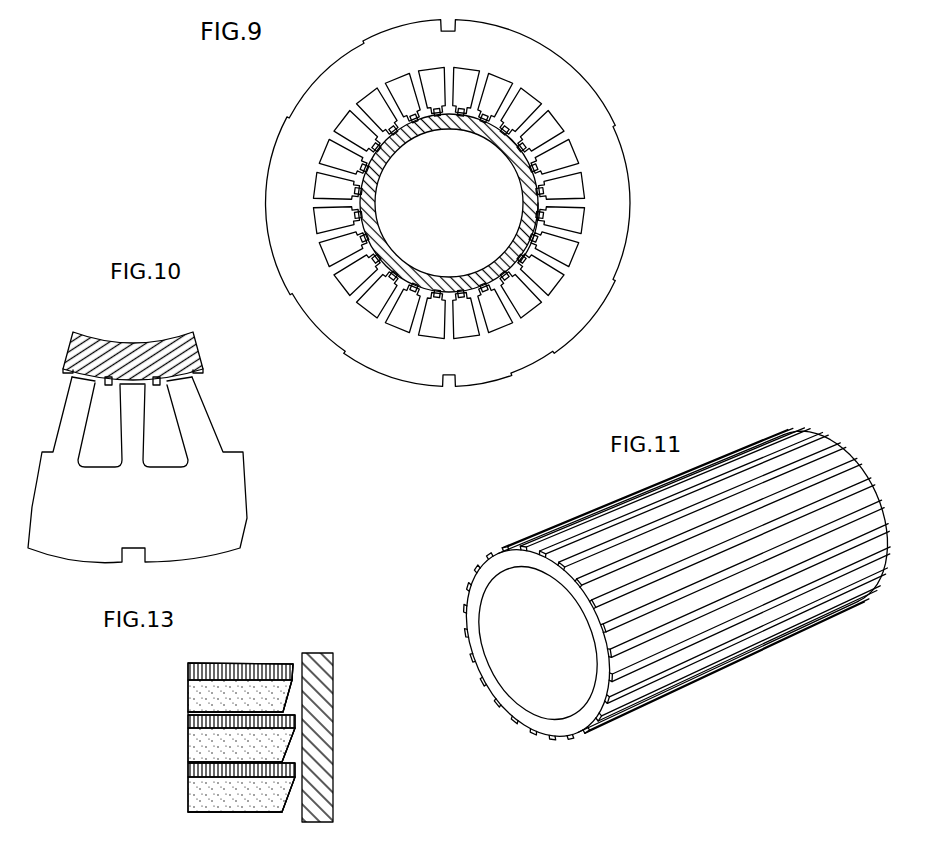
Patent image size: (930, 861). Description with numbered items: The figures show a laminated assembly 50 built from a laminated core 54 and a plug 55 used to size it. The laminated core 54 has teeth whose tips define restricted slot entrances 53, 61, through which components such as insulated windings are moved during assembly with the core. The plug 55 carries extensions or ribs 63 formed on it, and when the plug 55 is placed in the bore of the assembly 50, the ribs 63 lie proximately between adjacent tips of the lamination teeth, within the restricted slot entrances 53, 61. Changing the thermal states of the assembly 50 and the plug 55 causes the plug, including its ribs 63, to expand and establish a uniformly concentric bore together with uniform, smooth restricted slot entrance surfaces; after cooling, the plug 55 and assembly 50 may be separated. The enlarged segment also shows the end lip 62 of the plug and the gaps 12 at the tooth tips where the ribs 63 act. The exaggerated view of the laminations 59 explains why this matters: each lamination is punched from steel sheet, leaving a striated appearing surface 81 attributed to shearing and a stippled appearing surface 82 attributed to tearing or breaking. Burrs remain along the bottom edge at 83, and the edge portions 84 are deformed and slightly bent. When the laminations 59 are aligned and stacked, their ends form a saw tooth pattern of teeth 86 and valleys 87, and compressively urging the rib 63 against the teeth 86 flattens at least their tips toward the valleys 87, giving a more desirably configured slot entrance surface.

In FIG. 9, the laminated assembly 50 is at (680, 190).
In FIG. 10, the laminated assembly 50 is at (68, 560).
In FIG. 9, the laminated core 54 is at (620, 150).
In FIG. 10, the laminated core 54 is at (245, 485).
In FIG. 9, the plug 55 is at (526, 192).
In FIG. 10, the plug 55 is at (127, 343).
In FIG. 11, the plug 55 is at (823, 437).
In FIG. 9, the restricted slot entrance 53 is at (434, 302).
In FIG. 10, the restricted slot entrance 53 is at (110, 385).
In FIG. 9, the restricted slot entrance 61 is at (459, 302).
In FIG. 10, the restricted slot entrance 61 is at (167, 380).
In FIG. 9, the rib 63 is at (547, 275).
In FIG. 11, the rib 63 is at (503, 553).
In FIG. 13, the rib 63 is at (327, 748).
In FIG. 10, the sleeve end lip 62 is at (72, 378).
In FIG. 10, the tooth tip gap 12 is at (82, 382).
In FIG. 13, the lamination 59 is at (233, 663).
In FIG. 13, the striated appearing surface 81 is at (190, 670).
In FIG. 13, the stippled appearing surface 82 is at (190, 693).
In FIG. 13, the burr 83 is at (222, 813).
In FIG. 13, the edge portion 84 is at (287, 667).
In FIG. 13, the tooth 86 is at (295, 667).
In FIG. 13, the valley 87 is at (283, 710).